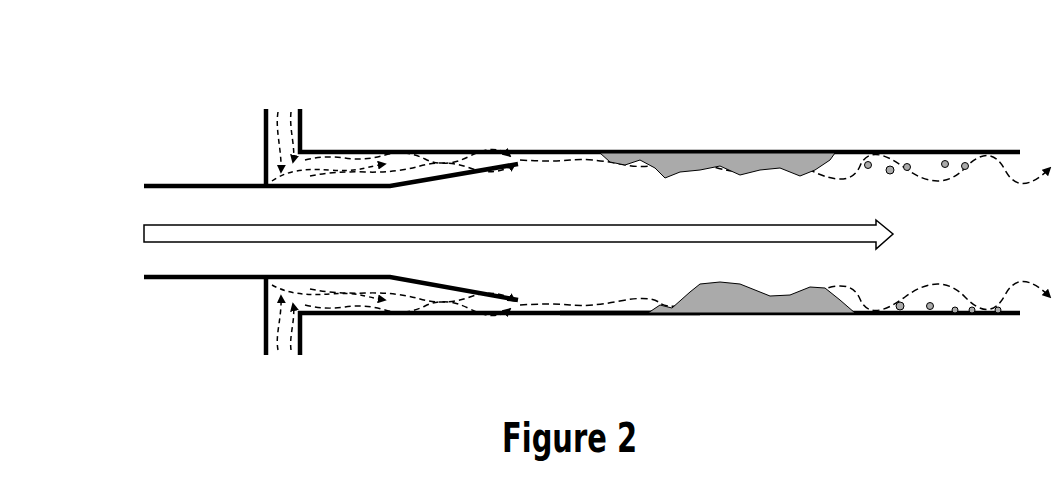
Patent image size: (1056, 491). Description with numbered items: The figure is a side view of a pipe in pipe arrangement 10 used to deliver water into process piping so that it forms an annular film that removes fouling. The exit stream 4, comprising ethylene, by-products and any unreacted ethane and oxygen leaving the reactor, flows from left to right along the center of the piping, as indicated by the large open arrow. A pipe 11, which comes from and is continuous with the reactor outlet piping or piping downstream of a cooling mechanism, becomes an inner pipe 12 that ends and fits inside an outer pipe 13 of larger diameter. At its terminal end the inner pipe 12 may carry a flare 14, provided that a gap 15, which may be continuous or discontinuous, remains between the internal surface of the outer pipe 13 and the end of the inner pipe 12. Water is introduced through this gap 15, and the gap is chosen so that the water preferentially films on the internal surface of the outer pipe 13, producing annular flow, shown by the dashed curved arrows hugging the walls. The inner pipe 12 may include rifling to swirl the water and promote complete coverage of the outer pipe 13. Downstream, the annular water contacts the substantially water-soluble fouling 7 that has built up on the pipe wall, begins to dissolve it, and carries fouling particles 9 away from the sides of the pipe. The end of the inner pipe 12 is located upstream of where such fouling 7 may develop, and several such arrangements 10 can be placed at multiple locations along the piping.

The exit stream 4 is at (144, 233).
The fouling 7 is at (670, 167).
The fouling particles 9 is at (868, 169).
The pipe in pipe arrangement 10 is at (382, 110).
The pipe 11 is at (223, 186).
The inner pipe 12 is at (303, 185).
The outer pipe 13 is at (578, 315).
The flare 14 is at (479, 172).
The gap 15 is at (524, 303).